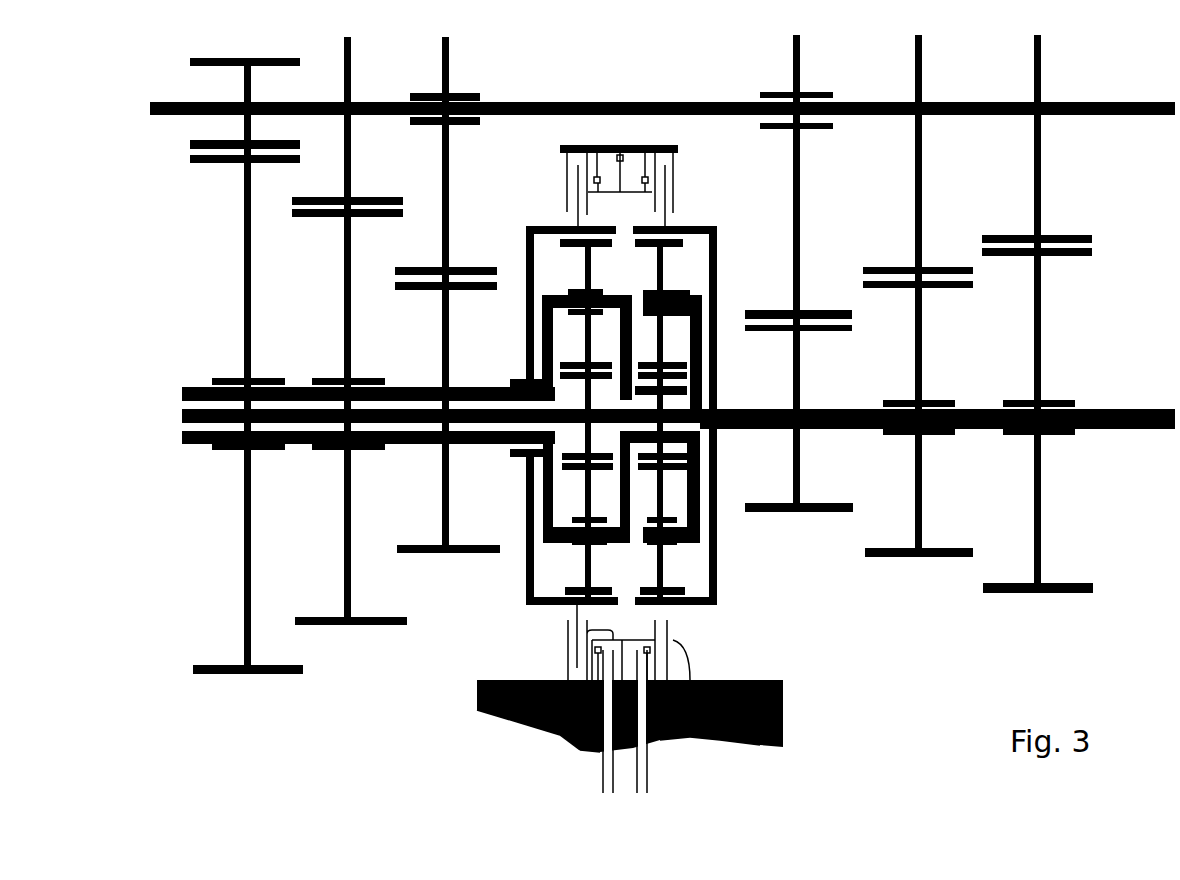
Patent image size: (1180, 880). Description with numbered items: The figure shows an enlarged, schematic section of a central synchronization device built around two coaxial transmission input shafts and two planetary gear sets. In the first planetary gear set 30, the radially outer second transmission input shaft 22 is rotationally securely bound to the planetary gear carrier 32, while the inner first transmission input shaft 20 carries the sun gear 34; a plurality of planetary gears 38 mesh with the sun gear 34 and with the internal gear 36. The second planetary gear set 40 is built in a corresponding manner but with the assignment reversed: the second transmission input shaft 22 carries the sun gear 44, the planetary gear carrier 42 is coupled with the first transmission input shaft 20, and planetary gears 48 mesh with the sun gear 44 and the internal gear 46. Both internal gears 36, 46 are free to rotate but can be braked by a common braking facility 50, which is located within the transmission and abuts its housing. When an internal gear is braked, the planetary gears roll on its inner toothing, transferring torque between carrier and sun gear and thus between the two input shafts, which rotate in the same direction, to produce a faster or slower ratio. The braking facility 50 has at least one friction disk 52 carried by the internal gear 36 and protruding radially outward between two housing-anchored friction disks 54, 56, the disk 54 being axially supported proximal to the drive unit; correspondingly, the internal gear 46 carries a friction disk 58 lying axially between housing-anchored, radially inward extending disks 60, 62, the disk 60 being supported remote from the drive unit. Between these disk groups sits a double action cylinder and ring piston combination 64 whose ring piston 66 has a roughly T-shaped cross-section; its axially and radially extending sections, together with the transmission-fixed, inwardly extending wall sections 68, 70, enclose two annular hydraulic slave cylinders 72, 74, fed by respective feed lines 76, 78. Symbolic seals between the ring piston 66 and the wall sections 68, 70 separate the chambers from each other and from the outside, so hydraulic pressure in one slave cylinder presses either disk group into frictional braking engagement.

The first transmission input shaft 20 is at (407, 423).
The second transmission input shaft 22 is at (297, 450).
The first planetary gear set 30 is at (552, 557).
The planetary gear carrier 32 is at (552, 482).
The sun gear 34 is at (522, 383).
The internal gear 36 is at (527, 247).
The planetary gears 38 is at (580, 265).
The second planetary gear set 40 is at (703, 610).
The planetary gear carrier 42 is at (700, 317).
The sun gear 44 is at (665, 386).
The internal gear 46 is at (663, 267).
The planetary gears 48 is at (713, 230).
The braking facility 50 is at (600, 130).
The friction disk 52 is at (565, 175).
The friction disk 54 is at (568, 188).
The friction disk 56 is at (596, 145).
The friction disk 58 is at (697, 740).
The friction disk 60 is at (717, 740).
The friction disk 62 is at (670, 740).
The double action cylinder and ring piston combination 64 is at (567, 743).
The ring piston 66 is at (483, 717).
The wall section 68 is at (507, 723).
The wall section 70 is at (583, 757).
The hydraulic slave cylinder 72 is at (627, 142).
The hydraulic slave cylinder 74 is at (645, 145).
The feed line 76 is at (607, 776).
The feed line 78 is at (643, 778).